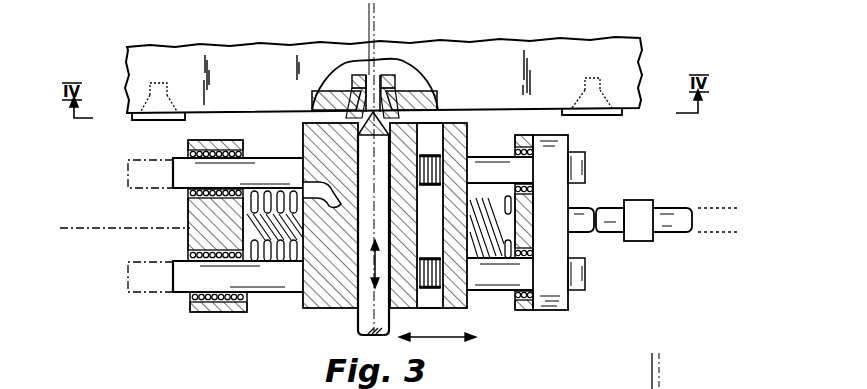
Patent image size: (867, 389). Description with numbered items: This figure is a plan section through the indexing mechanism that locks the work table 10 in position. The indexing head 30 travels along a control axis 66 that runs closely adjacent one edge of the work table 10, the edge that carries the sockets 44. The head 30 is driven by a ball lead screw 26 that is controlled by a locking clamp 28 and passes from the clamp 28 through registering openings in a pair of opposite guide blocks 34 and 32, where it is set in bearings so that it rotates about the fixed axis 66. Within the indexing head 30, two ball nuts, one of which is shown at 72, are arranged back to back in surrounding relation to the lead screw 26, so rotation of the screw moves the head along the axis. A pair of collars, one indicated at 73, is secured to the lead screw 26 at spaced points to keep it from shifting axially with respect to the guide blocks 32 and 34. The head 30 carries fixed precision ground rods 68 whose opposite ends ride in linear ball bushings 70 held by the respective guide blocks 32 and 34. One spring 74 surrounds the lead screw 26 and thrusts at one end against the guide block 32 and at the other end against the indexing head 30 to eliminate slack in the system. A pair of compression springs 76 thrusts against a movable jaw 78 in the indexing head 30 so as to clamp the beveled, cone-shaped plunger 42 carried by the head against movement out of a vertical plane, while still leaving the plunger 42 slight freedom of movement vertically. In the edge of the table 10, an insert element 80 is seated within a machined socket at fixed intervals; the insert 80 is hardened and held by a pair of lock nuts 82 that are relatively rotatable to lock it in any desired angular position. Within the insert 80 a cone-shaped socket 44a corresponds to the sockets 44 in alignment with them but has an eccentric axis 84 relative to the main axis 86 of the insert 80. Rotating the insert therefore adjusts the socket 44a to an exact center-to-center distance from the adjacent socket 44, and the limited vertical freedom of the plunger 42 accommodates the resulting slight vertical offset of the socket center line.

The work table 10 is at (127, 60).
The sockets 44 is at (147, 100).
The cone-shaped socket 44a is at (312, 98).
The ball lead screw 26 is at (585, 208).
The locking clamp 28 is at (660, 188).
The indexing head 30 is at (325, 310).
The guide block 32 is at (223, 313).
The guide block 34 is at (572, 310).
The plunger 42 is at (362, 328).
The control axis 66 is at (108, 228).
The precision ground rods 68 is at (178, 194).
The linear ball bushings 70 is at (244, 150).
The ball nut 72 is at (312, 184).
The collar 73 is at (518, 202).
The spring 74 is at (296, 262).
The compression springs 76 is at (430, 154).
The movable jaw 78 is at (403, 307).
The insert element 80 is at (430, 97).
The lock nuts 82 is at (402, 74).
The eccentric axis 84 is at (368, 28).
The main axis 86 is at (376, 16).